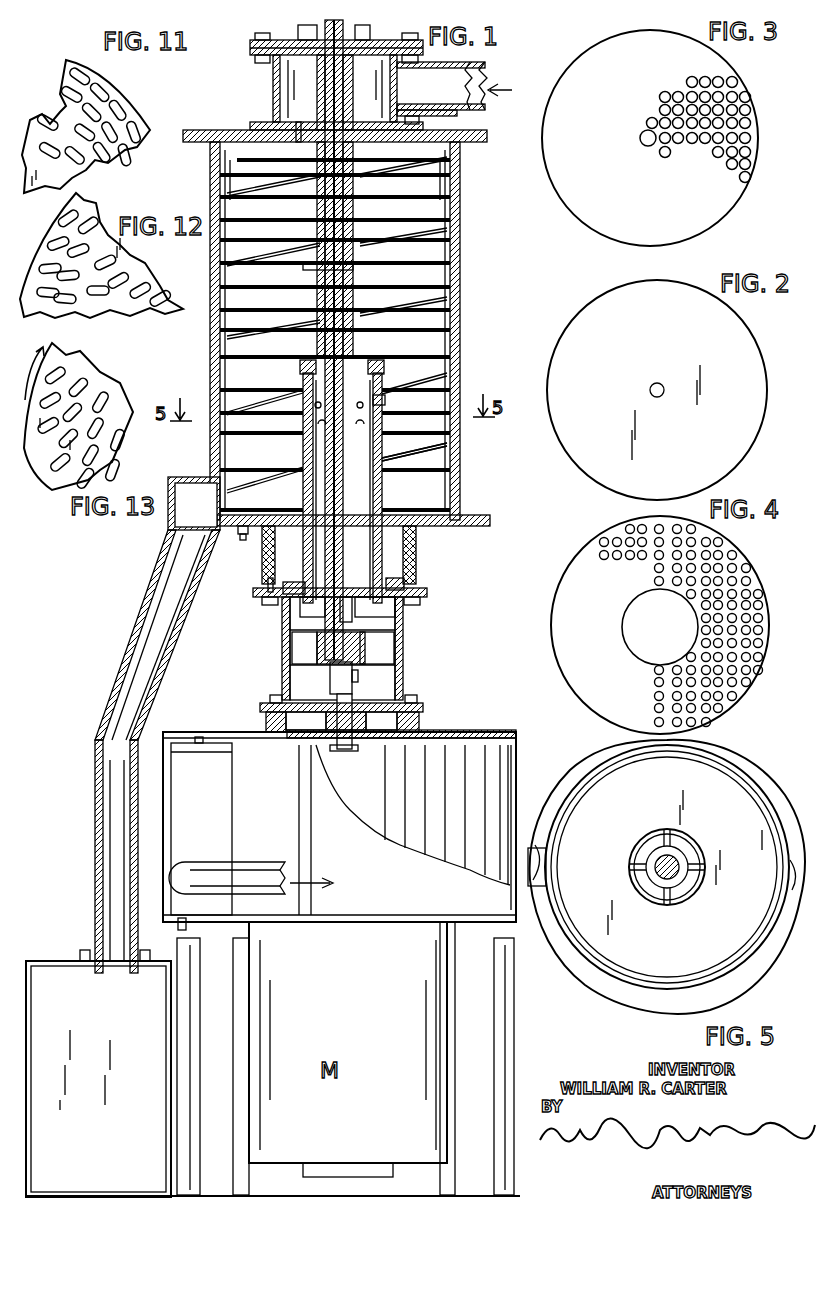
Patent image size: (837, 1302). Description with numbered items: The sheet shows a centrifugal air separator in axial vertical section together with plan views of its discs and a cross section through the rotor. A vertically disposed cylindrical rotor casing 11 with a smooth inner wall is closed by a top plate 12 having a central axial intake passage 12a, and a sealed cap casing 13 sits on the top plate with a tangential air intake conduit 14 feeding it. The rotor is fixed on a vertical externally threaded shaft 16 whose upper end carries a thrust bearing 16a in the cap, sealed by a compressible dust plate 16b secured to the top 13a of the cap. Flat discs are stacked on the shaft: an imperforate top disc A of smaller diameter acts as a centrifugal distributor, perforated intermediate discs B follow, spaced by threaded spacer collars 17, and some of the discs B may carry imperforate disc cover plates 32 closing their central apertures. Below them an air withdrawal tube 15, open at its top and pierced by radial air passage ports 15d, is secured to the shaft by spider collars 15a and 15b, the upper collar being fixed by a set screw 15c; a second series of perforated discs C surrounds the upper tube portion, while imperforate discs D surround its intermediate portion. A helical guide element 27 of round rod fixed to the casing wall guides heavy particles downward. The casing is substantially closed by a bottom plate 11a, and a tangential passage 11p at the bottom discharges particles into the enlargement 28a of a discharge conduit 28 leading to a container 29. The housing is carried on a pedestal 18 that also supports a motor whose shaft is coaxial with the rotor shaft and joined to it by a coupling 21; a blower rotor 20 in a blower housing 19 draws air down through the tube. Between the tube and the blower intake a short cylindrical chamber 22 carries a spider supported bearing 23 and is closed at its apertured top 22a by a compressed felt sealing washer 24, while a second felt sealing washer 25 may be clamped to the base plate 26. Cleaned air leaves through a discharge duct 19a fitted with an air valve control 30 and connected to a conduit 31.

In FIG. 1, the rotor casing 11 is at (462, 234).
In FIG. 5, the rotor casing 11 is at (728, 768).
In FIG. 1, the bottom plate 11a is at (453, 526).
In FIG. 1, the tangential passage 11p is at (194, 503).
In FIG. 1, the top plate 12 is at (485, 134).
In FIG. 1, the axial intake passage 12a is at (320, 130).
In FIG. 1, the cap casing 13 is at (273, 78).
In FIG. 1, the top of cap member 13a is at (300, 40).
In FIG. 1, the air intake conduit 14 is at (437, 100).
In FIG. 1, the air withdrawal tube 15 is at (380, 488).
In FIG. 5, the air withdrawal tube 15 is at (684, 902).
In FIG. 1, the spider collar 15a is at (313, 362).
In FIG. 1, the spider collar 15b is at (375, 645).
In FIG. 5, the spider collar 15b is at (670, 848).
In FIG. 1, the set screw 15c is at (360, 362).
In FIG. 1, the radial air passage ports 15d is at (380, 402).
In FIG. 1, the rotor shaft 16 is at (330, 433).
In FIG. 5, the rotor shaft 16 is at (663, 878).
In FIG. 1, the thrust bearing 16a is at (347, 52).
In FIG. 1, the compressible dust plate 16b is at (366, 33).
In FIG. 1, the spacer collars 17 is at (355, 205).
In FIG. 1, the pedestal 18 is at (452, 1040).
In FIG. 1, the blower housing 19 is at (453, 733).
In FIG. 5, the blower housing 19 is at (760, 984).
In FIG. 1, the discharge duct 19a is at (186, 924).
In FIG. 1, the blower rotor 20 is at (497, 777).
In FIG. 1, the coupling 21 is at (332, 680).
In FIG. 1, the cylindrical chamber 22 is at (404, 622).
In FIG. 1, the top of chamber 22a is at (428, 592).
In FIG. 1, the spider supported bearing 23 is at (320, 644).
In FIG. 1, the felt sealing washer 24 is at (292, 582).
In FIG. 1, the second felt sealing washer 25 is at (262, 566).
In FIG. 1, the base plate 26 is at (250, 534).
In FIG. 1, the helical guide element 27 is at (225, 192).
In FIG. 5, the helical guide element 27 is at (720, 757).
In FIG. 1, the discharge conduit 28 is at (130, 643).
In FIG. 1, the enlargement 28a is at (176, 497).
In FIG. 5, the enlargement 28a is at (537, 865).
In FIG. 1, the container 29 is at (47, 975).
In FIG. 1, the air valve control 30 is at (198, 736).
In FIG. 1, the conduit 31 is at (258, 868).
In FIG. 1, the disc cover plates 32 is at (368, 270).
In FIG. 1, the top disc A is at (452, 158).
In FIG. 2, the top disc A is at (750, 365).
In FIG. 1, the intermediate discs B is at (452, 190).
In FIG. 3, the intermediate discs B is at (752, 143).
In FIG. 1, the perforated discs C is at (455, 380).
In FIG. 4, the perforated discs C is at (766, 648).
In FIG. 1, the imperforate discs D is at (455, 470).
In FIG. 5, the imperforate discs D is at (730, 795).